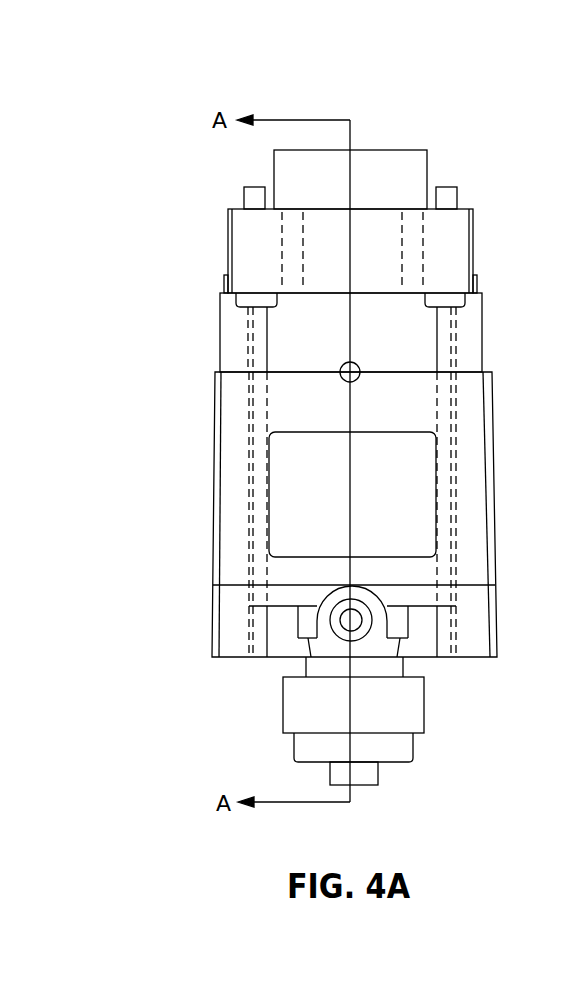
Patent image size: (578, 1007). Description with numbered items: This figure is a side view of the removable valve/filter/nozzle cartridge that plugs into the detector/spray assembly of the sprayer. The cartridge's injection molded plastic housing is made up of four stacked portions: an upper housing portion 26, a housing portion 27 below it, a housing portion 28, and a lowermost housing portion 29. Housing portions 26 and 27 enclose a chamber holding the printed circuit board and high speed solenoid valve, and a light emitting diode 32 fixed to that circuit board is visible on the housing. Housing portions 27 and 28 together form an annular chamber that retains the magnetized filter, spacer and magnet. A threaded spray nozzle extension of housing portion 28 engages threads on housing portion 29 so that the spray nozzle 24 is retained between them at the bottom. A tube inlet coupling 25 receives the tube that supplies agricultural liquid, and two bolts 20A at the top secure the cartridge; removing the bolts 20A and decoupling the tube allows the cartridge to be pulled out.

The bolts 20A is at (248, 199).
The spray nozzle 24 is at (372, 770).
The tube inlet coupling 25 is at (370, 603).
The housing portion 26 is at (299, 178).
The housing portion 27 is at (233, 490).
The housing portion 28 is at (236, 626).
The housing portion 29 is at (298, 748).
The light emitting diode 32 is at (358, 364).